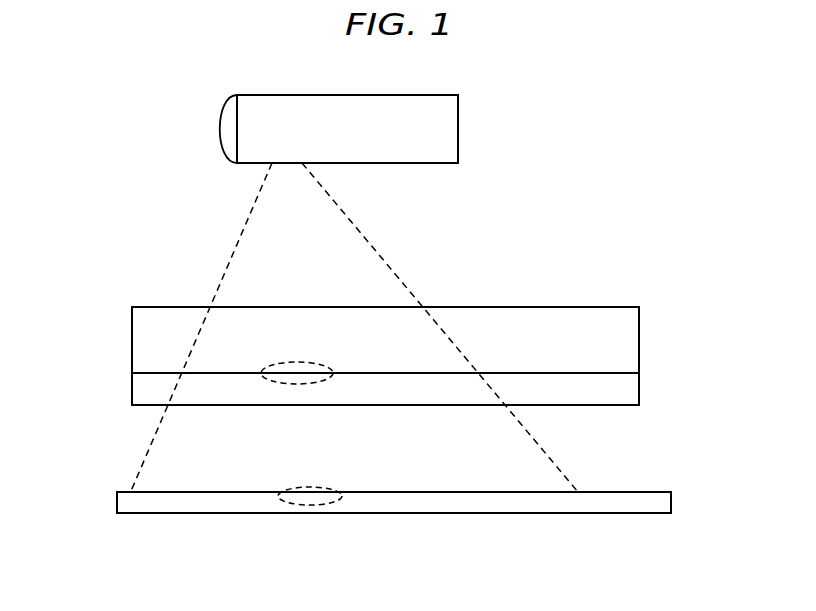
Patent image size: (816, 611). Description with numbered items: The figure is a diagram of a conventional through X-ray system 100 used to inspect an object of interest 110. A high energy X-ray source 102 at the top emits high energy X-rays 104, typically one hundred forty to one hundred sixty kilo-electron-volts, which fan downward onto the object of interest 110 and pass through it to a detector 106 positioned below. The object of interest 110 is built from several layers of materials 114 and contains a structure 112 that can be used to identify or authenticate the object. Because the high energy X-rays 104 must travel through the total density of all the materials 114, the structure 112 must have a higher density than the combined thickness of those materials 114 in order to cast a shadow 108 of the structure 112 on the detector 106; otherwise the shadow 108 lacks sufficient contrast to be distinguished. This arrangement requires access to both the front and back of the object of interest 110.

The through X-ray system 100 is at (608, 47).
The high energy X-ray source 102 is at (459, 128).
The high energy X-rays 104 is at (302, 265).
The detector 106 is at (672, 500).
The shadow 108 is at (310, 505).
The object of interest 110 is at (650, 307).
The structure 112 is at (303, 385).
The materials 114 is at (132, 347).